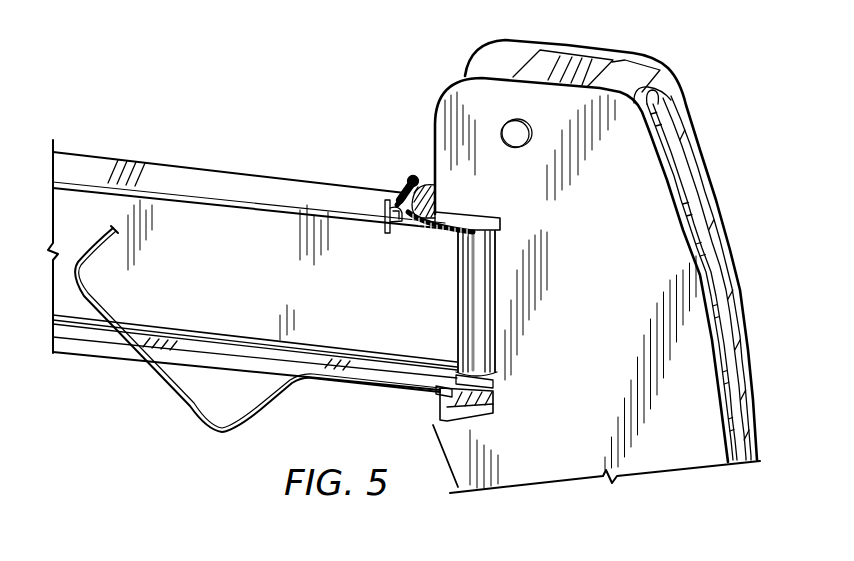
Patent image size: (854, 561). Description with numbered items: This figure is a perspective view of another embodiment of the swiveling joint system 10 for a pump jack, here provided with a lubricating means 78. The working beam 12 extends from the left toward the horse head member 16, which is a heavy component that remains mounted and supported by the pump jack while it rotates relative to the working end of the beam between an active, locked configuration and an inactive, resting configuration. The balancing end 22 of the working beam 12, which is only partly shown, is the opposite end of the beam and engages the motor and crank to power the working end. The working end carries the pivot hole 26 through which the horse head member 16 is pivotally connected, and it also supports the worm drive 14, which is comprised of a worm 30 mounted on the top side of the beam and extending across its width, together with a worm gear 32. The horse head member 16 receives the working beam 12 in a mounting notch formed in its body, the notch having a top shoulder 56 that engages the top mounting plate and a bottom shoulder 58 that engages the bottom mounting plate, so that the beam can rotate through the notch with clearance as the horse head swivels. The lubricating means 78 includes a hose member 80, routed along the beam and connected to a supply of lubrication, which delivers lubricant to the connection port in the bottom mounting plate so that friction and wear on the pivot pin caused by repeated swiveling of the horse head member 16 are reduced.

The swiveling joint system 10 is at (413, 86).
The working beam 12 is at (262, 282).
The worm drive 14 is at (400, 194).
The horse head member 16 is at (740, 278).
The balancing end 22 is at (270, 336).
The pivot hole 26 is at (487, 300).
The worm 30 is at (408, 178).
The worm gear 32 is at (448, 229).
The top shoulder 56 is at (500, 221).
The bottom shoulder 58 is at (490, 418).
The lubricating means 78 is at (440, 392).
The hose member 80 is at (172, 394).